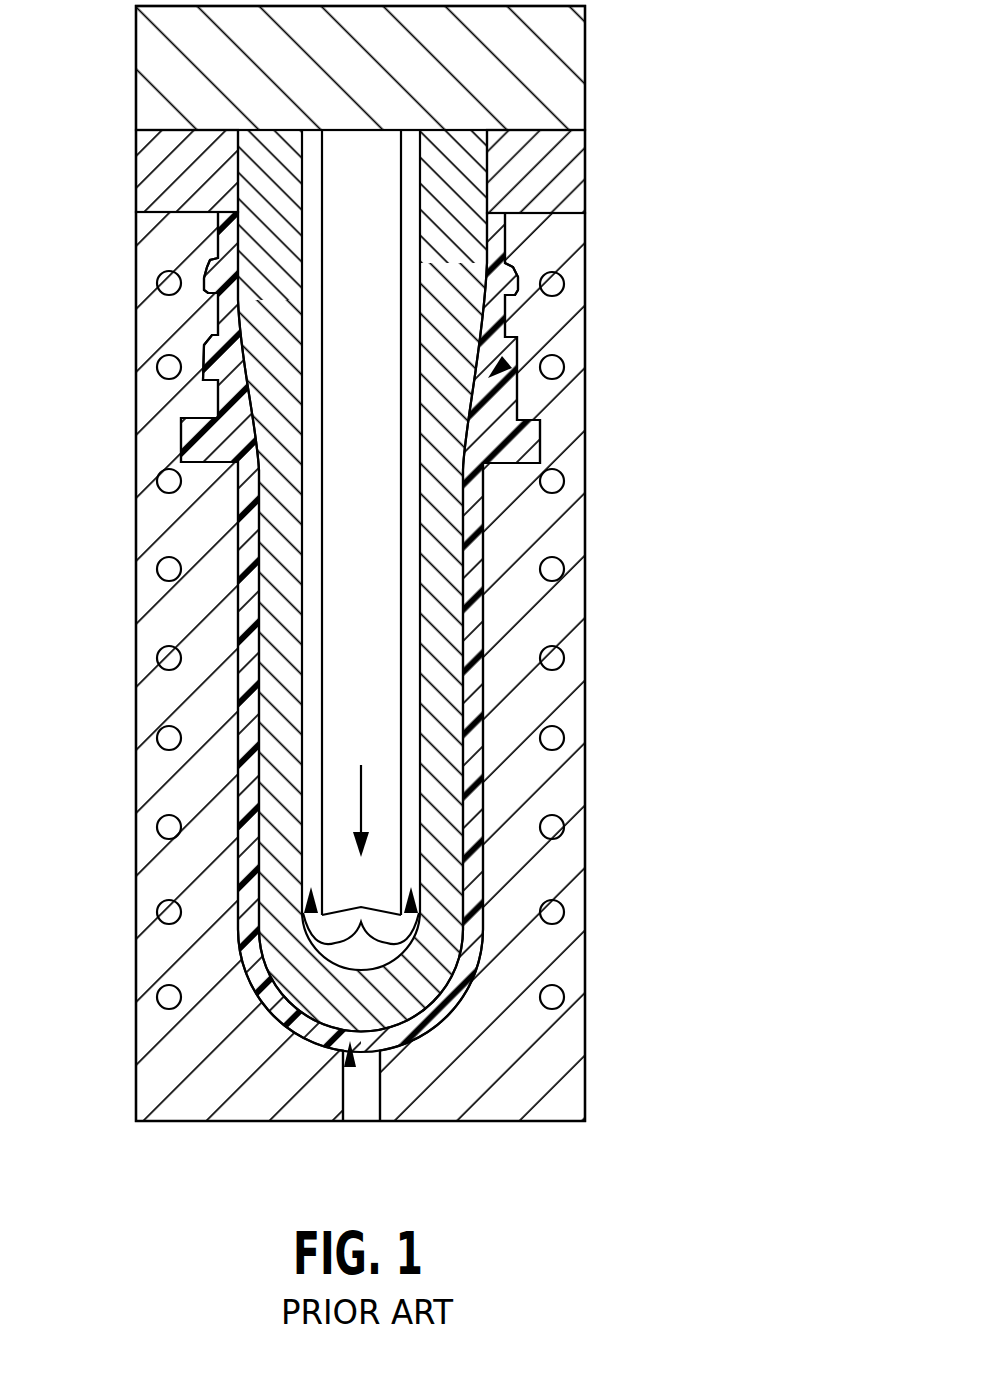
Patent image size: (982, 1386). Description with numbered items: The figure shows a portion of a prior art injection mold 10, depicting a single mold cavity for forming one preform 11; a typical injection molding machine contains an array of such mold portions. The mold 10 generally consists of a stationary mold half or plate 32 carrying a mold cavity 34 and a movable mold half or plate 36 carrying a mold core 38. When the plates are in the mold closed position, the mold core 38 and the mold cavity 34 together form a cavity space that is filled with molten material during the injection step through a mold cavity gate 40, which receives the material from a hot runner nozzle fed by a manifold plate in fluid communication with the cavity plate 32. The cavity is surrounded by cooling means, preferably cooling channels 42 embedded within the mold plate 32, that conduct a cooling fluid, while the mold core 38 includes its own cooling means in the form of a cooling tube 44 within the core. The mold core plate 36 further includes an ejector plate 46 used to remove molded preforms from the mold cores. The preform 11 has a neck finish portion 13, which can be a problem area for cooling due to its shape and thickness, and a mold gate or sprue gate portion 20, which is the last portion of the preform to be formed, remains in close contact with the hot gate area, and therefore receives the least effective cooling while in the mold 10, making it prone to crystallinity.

The injection mold 10 is at (693, 472).
The preform 11 is at (470, 710).
The neck finish portion 13 is at (505, 362).
The mold gate portion 20 is at (343, 1067).
The stationary mold half or plate 32 is at (152, 875).
The mold cavity 34 is at (485, 633).
The movable mold half or plate 36 is at (573, 121).
The mold core 38 is at (273, 438).
The mold cavity gate 40 is at (357, 1095).
The cooling channels 42 is at (162, 822).
The cooling tube 44 is at (372, 297).
The ejector plate 46 is at (575, 170).